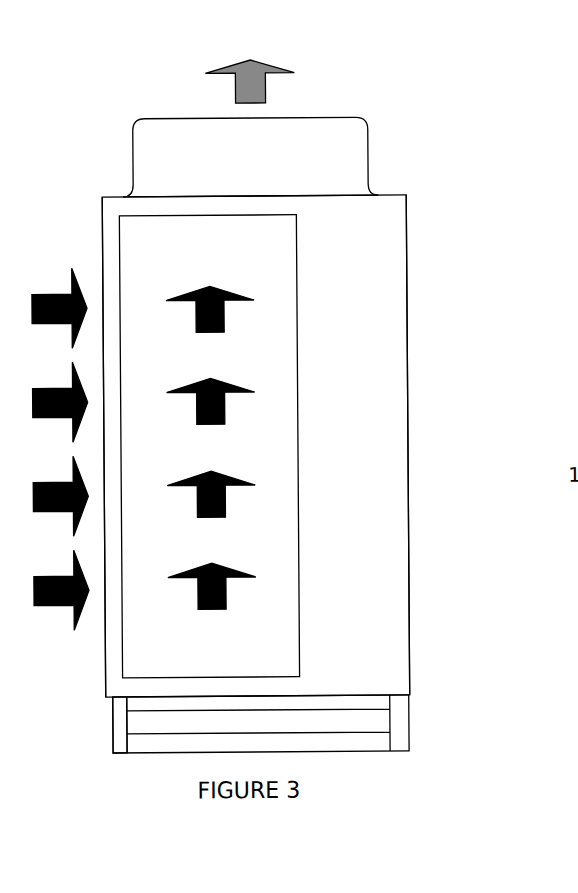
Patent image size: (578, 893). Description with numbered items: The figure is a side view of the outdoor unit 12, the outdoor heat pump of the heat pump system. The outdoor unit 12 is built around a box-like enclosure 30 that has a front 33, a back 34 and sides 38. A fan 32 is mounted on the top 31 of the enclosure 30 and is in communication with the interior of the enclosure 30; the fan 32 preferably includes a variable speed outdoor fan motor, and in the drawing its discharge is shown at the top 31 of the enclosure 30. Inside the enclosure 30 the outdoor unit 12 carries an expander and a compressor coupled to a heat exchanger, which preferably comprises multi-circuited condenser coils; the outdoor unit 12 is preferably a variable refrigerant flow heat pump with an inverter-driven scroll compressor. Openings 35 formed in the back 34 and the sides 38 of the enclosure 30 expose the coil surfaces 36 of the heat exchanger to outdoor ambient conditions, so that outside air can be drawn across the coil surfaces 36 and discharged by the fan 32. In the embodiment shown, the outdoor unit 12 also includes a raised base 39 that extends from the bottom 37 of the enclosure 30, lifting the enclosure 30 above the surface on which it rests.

The outdoor unit 12 is at (410, 160).
The enclosure 30 is at (408, 298).
The top 31 is at (176, 195).
The fan 32 is at (308, 118).
The front 33 is at (408, 504).
The back 34 is at (103, 258).
The openings 35 is at (298, 335).
The coil surfaces 36 is at (243, 446).
The bottom 37 is at (348, 697).
The sides 38 is at (347, 642).
The raised base 39 is at (110, 711).